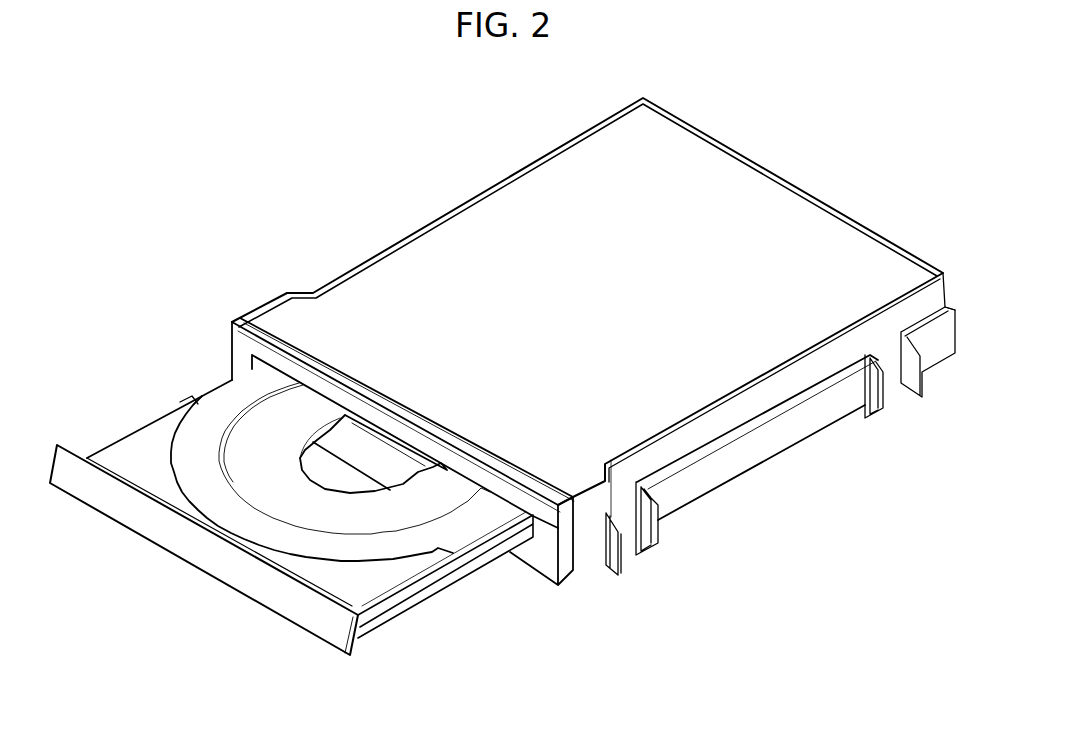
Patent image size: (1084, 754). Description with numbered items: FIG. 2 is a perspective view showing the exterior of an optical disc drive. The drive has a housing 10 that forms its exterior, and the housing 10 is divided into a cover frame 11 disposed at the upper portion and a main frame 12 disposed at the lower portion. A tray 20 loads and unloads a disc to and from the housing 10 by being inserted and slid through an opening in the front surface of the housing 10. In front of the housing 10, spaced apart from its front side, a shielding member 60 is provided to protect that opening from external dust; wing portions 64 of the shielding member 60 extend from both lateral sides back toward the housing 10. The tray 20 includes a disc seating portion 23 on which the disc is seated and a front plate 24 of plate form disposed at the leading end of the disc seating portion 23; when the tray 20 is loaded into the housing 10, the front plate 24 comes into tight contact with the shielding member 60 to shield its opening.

The housing 10 is at (483, 183).
The cover frame 11 is at (402, 267).
The main frame 12 is at (730, 415).
The tray 20 is at (291, 499).
The disc seating portion 23 is at (223, 407).
The front plate 24 is at (302, 612).
The shielding member 60 is at (398, 438).
The wing portions 64 is at (568, 550).